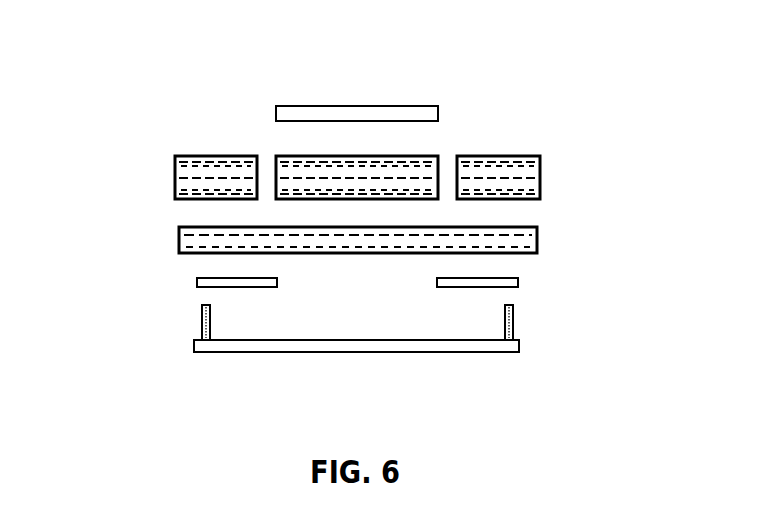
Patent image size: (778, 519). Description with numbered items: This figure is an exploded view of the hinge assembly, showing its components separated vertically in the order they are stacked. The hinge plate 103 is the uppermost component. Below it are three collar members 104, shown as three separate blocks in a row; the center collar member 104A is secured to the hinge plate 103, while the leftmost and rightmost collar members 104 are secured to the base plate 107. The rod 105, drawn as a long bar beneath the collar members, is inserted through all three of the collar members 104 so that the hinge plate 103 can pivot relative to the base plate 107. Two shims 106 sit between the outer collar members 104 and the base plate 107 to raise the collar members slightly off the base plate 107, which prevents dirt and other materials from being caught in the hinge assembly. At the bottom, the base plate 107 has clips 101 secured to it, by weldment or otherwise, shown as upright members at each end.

The clips 101 is at (197, 322).
The hinge plate 103 is at (428, 104).
The collar members 104 is at (211, 155).
The central block 104A is at (291, 157).
The rod 105 is at (541, 242).
The shims 106 is at (192, 281).
The base plate 107 is at (283, 355).